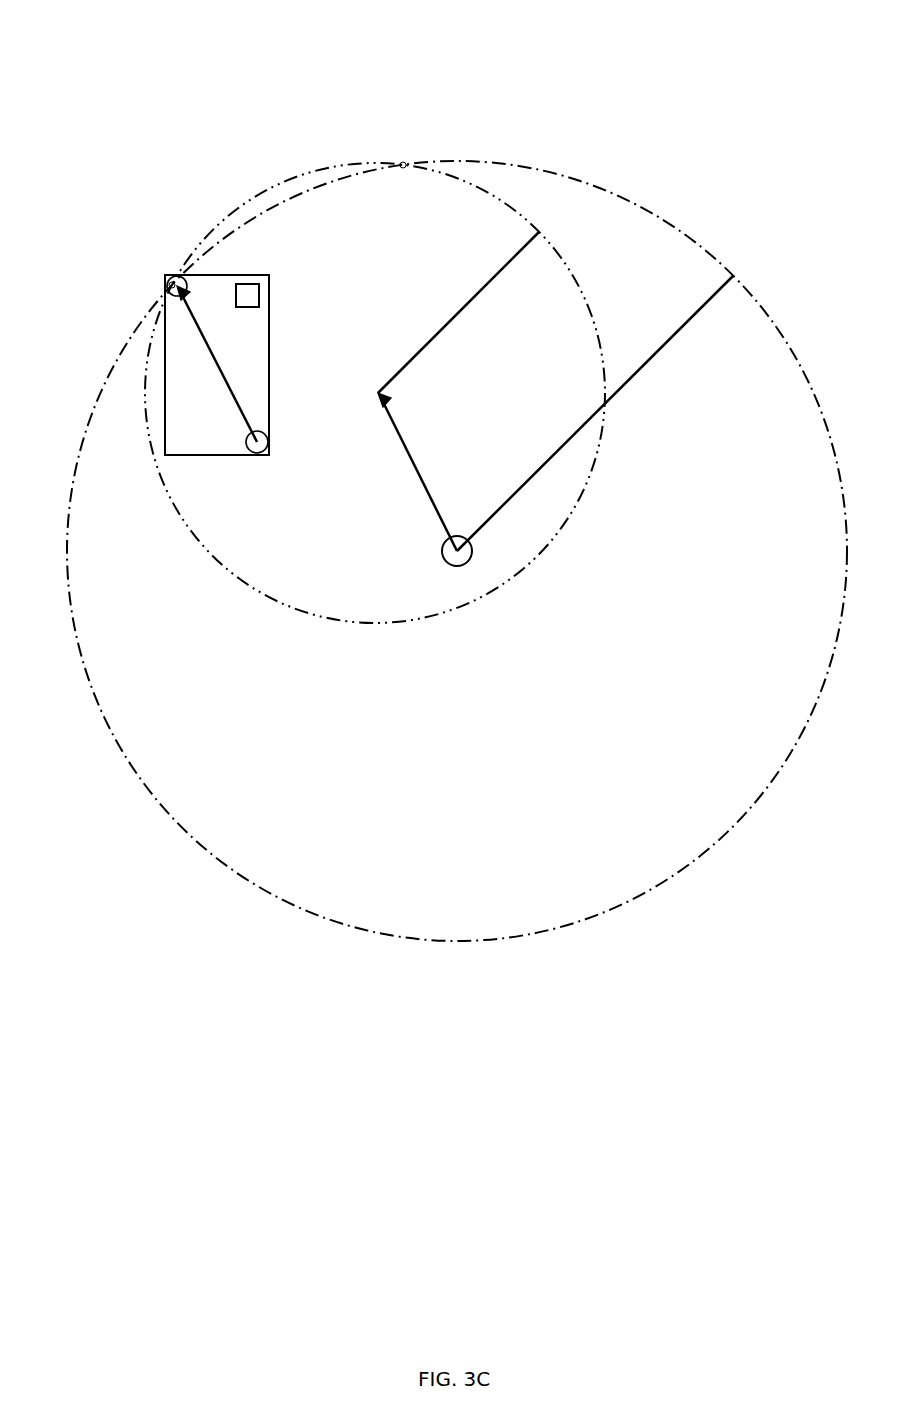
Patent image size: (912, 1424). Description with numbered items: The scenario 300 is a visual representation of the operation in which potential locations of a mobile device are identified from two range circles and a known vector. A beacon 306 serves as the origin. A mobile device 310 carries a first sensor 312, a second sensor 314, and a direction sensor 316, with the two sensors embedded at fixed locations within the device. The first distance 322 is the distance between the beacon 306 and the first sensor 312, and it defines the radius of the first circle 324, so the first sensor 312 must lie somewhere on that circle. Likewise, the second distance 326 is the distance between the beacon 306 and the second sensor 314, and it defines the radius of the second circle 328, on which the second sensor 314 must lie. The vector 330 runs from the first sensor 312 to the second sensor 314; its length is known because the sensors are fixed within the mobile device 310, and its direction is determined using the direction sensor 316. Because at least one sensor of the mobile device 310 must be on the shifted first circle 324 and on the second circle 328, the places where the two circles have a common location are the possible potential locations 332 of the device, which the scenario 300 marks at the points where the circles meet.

The localization scenario 300 is at (113, 50).
The beacon 306 is at (455, 566).
The mobile device 310 is at (213, 275).
The first sensor 312 is at (247, 442).
The second sensor 314 is at (170, 283).
The direction sensor 316 is at (247, 307).
The first distance 322 is at (483, 290).
The first circle 324 is at (375, 624).
The second distance 326 is at (542, 467).
The second circle 328 is at (185, 825).
The vector 330 is at (215, 358).
The potential locations 332 is at (400, 165).